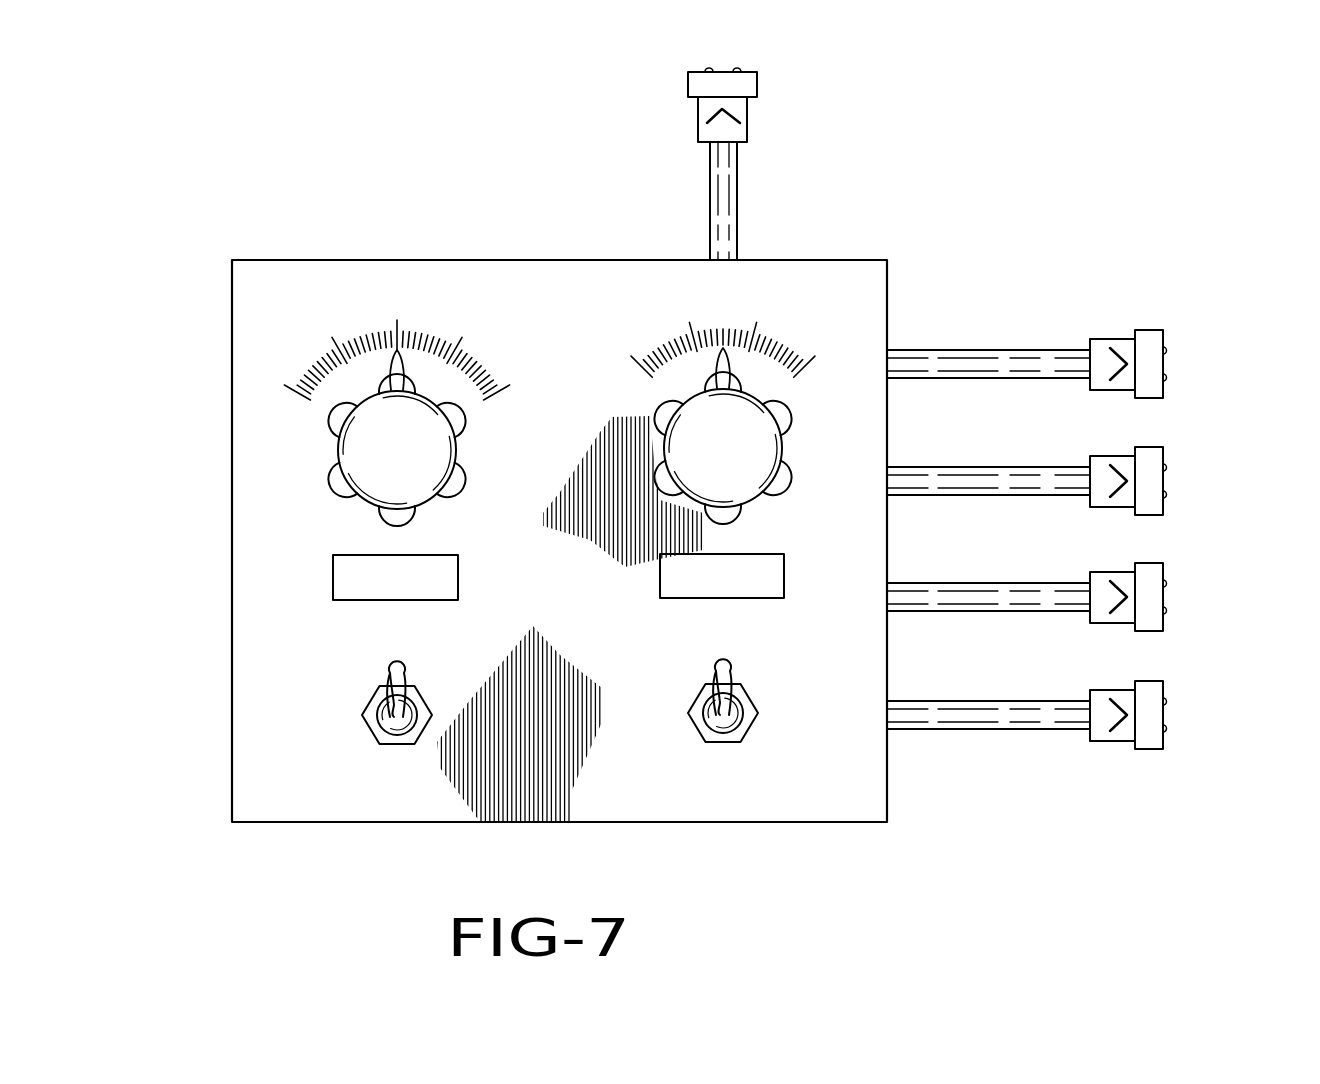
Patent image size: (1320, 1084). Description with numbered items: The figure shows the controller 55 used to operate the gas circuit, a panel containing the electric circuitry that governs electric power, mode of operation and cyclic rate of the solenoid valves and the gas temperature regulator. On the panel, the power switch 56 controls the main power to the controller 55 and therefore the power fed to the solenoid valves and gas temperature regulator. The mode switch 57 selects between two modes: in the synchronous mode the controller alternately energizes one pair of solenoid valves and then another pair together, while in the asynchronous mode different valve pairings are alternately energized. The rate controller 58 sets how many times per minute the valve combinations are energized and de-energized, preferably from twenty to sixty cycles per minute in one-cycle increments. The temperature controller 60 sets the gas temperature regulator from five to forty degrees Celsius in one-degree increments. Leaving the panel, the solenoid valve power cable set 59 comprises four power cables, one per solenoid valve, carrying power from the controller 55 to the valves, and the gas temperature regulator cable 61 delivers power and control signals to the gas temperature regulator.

The controller 55 is at (832, 851).
The power switch 56 is at (393, 712).
The mode switch 57 is at (727, 713).
The rate controller 58 is at (389, 445).
The solenoid valve power cable set 59 is at (1175, 313).
The temperature controller 60 is at (713, 445).
The gas temperature regulator cable 61 is at (748, 82).